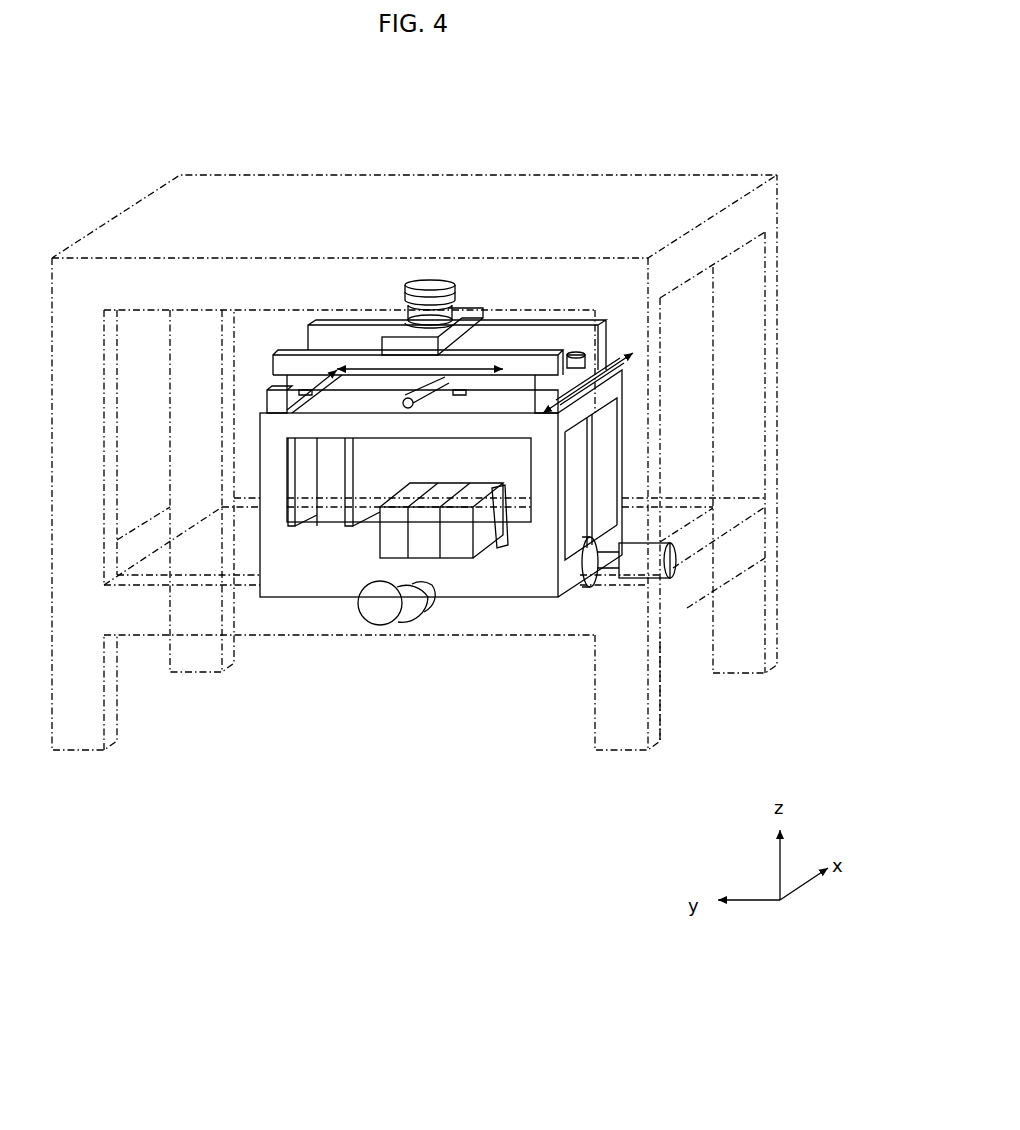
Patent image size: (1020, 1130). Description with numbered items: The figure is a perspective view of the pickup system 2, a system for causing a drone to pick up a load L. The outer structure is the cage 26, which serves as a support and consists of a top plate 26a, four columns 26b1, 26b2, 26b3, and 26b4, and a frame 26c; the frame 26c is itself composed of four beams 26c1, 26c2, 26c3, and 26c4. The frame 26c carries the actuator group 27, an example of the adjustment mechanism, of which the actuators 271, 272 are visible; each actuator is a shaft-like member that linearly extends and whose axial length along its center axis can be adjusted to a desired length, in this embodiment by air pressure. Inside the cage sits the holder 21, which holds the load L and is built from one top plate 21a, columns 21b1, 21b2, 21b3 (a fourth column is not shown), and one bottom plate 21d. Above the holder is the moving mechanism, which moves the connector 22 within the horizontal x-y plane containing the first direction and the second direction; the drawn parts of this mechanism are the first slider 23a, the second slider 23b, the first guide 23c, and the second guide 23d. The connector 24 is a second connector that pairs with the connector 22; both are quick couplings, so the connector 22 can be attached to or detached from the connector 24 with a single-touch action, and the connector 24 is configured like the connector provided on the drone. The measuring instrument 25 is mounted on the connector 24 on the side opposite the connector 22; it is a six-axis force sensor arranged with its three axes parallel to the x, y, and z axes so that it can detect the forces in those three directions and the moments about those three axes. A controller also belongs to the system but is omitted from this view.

The pickup system 2 is at (768, 122).
The holder 21 is at (490, 523).
The top plate 21a is at (383, 440).
The column 21b1 is at (292, 540).
The column 21b2 is at (620, 418).
The column 21b3 is at (622, 442).
The bottom plate 21d is at (546, 600).
The connector 22 is at (468, 332).
The first slider 23a is at (566, 322).
The second slider 23b is at (400, 330).
The first guide 23c is at (427, 378).
The second guide 23d is at (318, 390).
The connector 24 is at (470, 320).
The measuring instrument 25 is at (445, 275).
The cage 26 is at (462, 430).
The top plate 26a is at (362, 190).
The column 26b1 is at (118, 735).
The column 26b2 is at (663, 700).
The column 26b3 is at (780, 622).
The column 26b4 is at (195, 672).
The frame 26c is at (487, 581).
The beam 26c1 is at (462, 638).
The beam 26c2 is at (745, 570).
The beam 26c3 is at (700, 493).
The beam 26c4 is at (160, 535).
The actuator group 27 is at (507, 635).
The actuator 271 is at (385, 606).
The actuator 272 is at (644, 580).
The load L is at (488, 532).